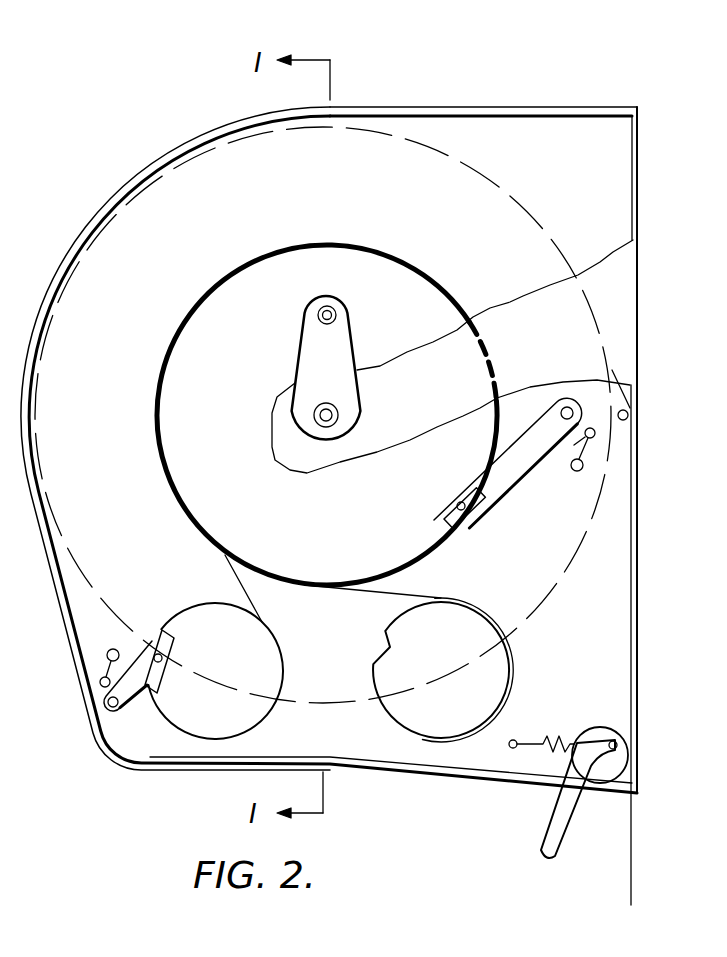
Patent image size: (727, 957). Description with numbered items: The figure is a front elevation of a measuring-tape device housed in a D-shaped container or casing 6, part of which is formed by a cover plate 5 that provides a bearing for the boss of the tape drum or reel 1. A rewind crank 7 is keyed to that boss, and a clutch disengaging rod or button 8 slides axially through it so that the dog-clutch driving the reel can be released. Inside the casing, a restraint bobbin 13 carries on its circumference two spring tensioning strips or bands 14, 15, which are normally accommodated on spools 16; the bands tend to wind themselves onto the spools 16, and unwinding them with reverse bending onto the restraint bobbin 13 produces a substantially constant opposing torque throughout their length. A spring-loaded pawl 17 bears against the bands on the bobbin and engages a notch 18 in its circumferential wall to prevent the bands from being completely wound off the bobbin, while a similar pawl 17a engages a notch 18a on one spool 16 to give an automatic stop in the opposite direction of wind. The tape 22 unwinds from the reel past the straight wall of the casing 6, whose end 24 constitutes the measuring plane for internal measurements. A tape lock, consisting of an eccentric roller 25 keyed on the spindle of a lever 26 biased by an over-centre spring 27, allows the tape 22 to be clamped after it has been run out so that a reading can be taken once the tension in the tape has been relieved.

The tape drum or reel 1 is at (170, 170).
The end of the straight wall 24 is at (565, 107).
The D-shaped container or casing 6 is at (639, 188).
The tape 22 is at (629, 890).
The restraint bobbin 13 is at (412, 548).
The spring tensioning strip or band 14 is at (200, 290).
The rewind crank 7 is at (345, 326).
The clutch disengaging rod or button 8 is at (340, 412).
The cover plate 5 is at (520, 297).
The spring-loaded pawl 17 is at (512, 473).
The notch 18 is at (465, 523).
The pawl 17a is at (135, 690).
The notch 18a is at (162, 640).
The spool 16 is at (213, 727).
The spring tensioning strip or band 15 is at (378, 596).
The eccentric roller 25 is at (598, 730).
The lever 26 is at (573, 797).
The over-centre spring 27 is at (566, 737).